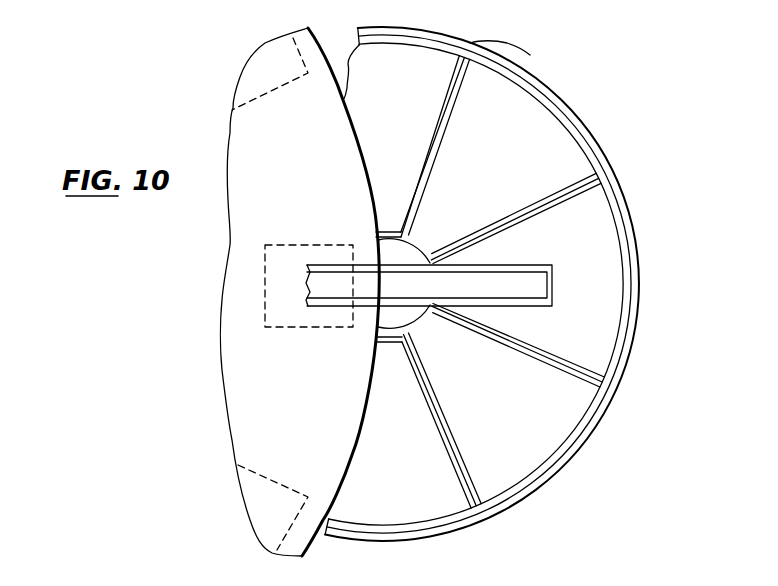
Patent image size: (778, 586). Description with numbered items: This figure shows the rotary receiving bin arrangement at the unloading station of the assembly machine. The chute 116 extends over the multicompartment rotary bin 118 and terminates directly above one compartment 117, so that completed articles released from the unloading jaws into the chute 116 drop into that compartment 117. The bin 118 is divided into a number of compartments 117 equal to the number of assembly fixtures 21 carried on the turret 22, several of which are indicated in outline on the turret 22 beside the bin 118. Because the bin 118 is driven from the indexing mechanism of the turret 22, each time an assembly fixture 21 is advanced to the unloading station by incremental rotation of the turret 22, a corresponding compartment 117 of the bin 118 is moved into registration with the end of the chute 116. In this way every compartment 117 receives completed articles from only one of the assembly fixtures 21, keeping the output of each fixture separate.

The assembly fixture 21 is at (277, 86).
The turret 22 is at (298, 543).
The chute 116 is at (542, 292).
The compartment 117 is at (505, 107).
The rotary bin 118 is at (613, 157).